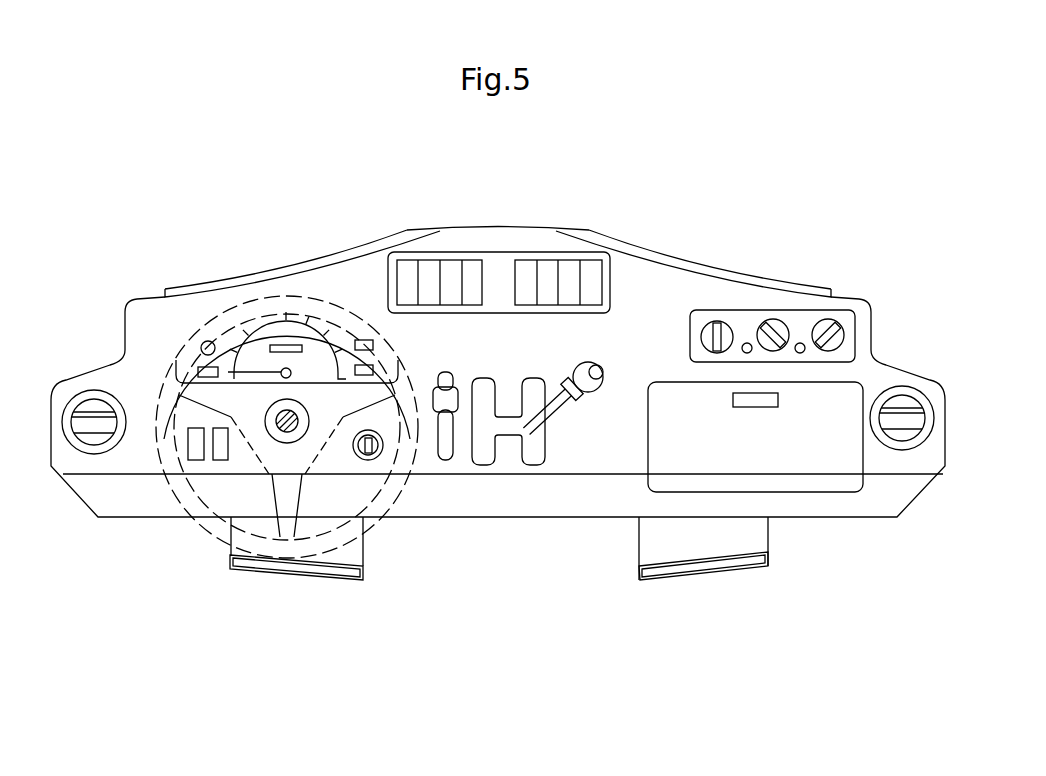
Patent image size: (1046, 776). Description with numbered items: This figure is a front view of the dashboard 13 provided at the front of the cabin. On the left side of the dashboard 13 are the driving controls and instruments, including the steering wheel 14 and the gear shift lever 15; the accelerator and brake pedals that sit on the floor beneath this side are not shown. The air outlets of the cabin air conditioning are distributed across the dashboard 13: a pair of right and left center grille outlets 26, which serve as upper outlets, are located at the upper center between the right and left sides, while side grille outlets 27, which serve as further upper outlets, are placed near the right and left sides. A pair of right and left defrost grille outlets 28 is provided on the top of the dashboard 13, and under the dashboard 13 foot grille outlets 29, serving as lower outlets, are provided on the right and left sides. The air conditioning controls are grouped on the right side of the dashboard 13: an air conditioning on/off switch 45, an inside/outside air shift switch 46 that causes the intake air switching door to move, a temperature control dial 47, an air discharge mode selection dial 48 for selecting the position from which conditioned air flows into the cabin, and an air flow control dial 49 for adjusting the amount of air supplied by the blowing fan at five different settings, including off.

The dashboard 13 is at (587, 440).
The steering wheel 14 is at (408, 465).
The gear shift lever 15 is at (583, 364).
The center grille outlets 26 is at (551, 282).
The side grille outlets 27 is at (94, 428).
The defrost grille outlets 28 is at (293, 264).
The foot grille outlets 29 is at (292, 570).
The air conditioning on/off switch 45 is at (800, 354).
The inside/outside air shift switch 46 is at (747, 354).
The temperature control dial 47 is at (701, 337).
The air discharge mode selection dial 48 is at (778, 321).
The air flow control dial 49 is at (845, 335).